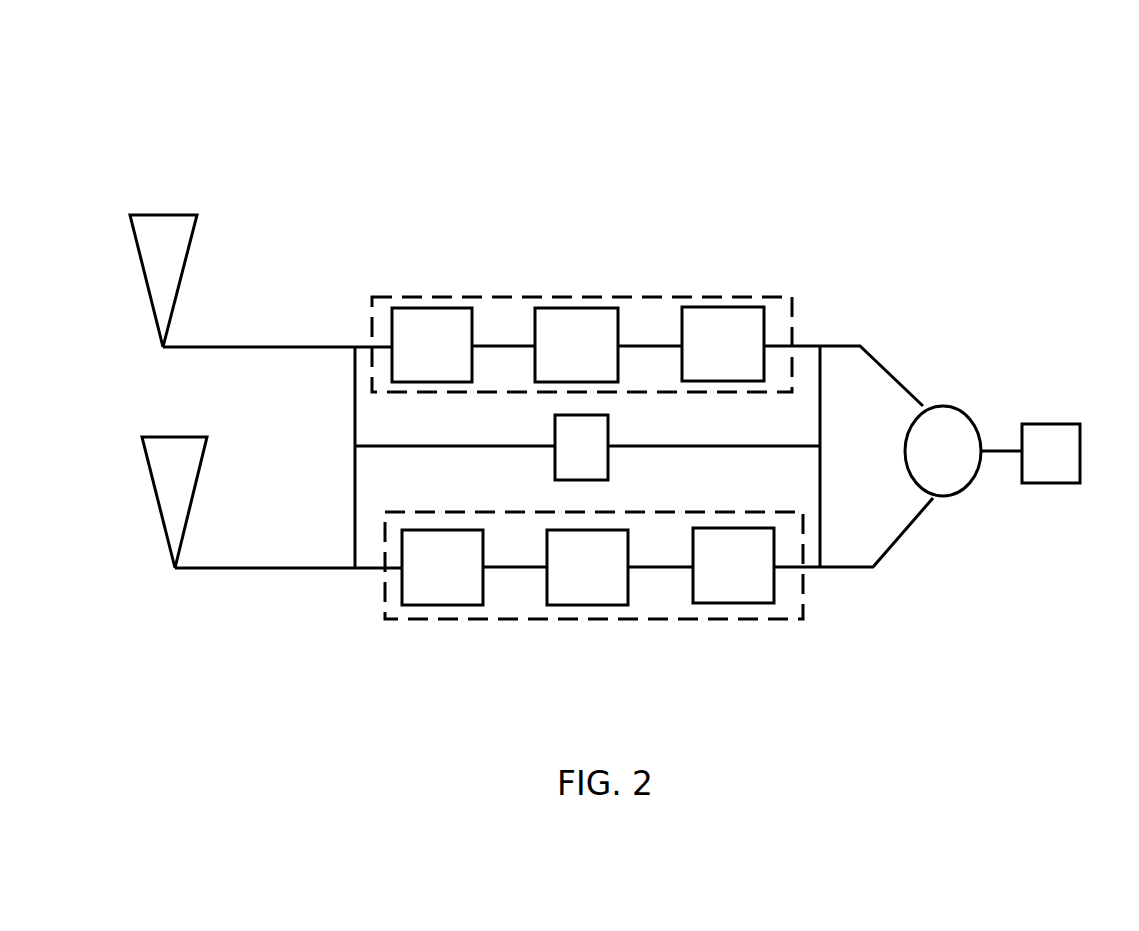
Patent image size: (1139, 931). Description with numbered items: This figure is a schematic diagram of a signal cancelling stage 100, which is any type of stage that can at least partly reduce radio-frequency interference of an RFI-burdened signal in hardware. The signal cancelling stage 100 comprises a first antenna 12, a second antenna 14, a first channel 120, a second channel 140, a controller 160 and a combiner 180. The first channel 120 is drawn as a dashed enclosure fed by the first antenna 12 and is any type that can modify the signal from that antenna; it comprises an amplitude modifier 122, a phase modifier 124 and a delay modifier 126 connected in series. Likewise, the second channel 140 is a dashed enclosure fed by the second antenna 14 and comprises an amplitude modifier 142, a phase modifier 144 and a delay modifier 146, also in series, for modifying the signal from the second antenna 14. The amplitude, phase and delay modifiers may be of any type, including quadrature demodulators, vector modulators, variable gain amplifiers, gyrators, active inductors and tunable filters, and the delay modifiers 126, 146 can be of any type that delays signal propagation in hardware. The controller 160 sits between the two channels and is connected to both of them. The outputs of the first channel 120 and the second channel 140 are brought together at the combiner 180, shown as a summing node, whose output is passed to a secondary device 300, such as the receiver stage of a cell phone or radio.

The signal cancelling stage 100 is at (583, 110).
The first antenna 12 is at (165, 238).
The second antenna 14 is at (173, 488).
The first channel 120 is at (780, 307).
The amplitude modifier 122 is at (405, 325).
The phase modifier 124 is at (565, 320).
The delay modifier 126 is at (710, 320).
The second channel 140 is at (780, 610).
The amplitude modifier 142 is at (400, 581).
The phase modifier 144 is at (608, 585).
The delay modifier 146 is at (758, 588).
The controller 160 is at (570, 447).
The combiner 180 is at (940, 418).
The secondary device 300 is at (1057, 447).